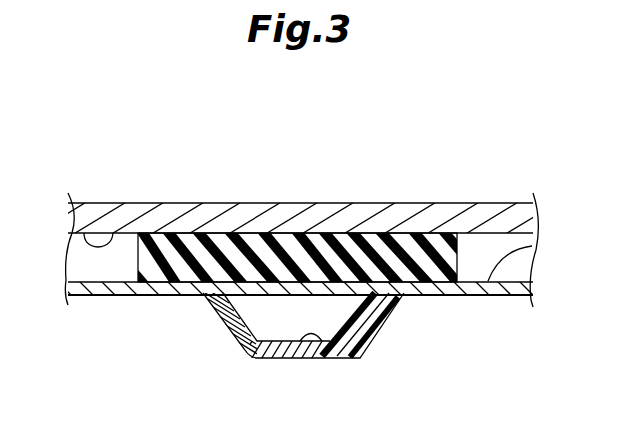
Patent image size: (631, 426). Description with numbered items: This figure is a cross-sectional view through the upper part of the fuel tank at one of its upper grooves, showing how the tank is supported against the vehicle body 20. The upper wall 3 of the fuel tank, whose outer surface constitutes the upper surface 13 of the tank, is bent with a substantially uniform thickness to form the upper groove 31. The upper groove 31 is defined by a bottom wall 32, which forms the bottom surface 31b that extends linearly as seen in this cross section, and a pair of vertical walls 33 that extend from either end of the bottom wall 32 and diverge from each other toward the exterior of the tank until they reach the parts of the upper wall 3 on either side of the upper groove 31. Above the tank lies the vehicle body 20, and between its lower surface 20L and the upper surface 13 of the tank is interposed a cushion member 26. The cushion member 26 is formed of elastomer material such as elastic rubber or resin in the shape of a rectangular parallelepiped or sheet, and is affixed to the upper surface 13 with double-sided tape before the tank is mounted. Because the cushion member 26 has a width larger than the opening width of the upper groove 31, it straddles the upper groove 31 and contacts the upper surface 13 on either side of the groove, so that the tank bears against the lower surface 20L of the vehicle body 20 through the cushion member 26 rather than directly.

The vehicle body 20 is at (404, 212).
The lower surface of the vehicle body 20L is at (109, 238).
The cushion member 26 is at (243, 250).
The upper surface 13 is at (90, 281).
The upper wall 3 is at (533, 247).
The upper groove 31 is at (306, 325).
The vertical walls 33 is at (217, 333).
The bottom wall 32 is at (266, 359).
The bottom surface 31b is at (313, 358).